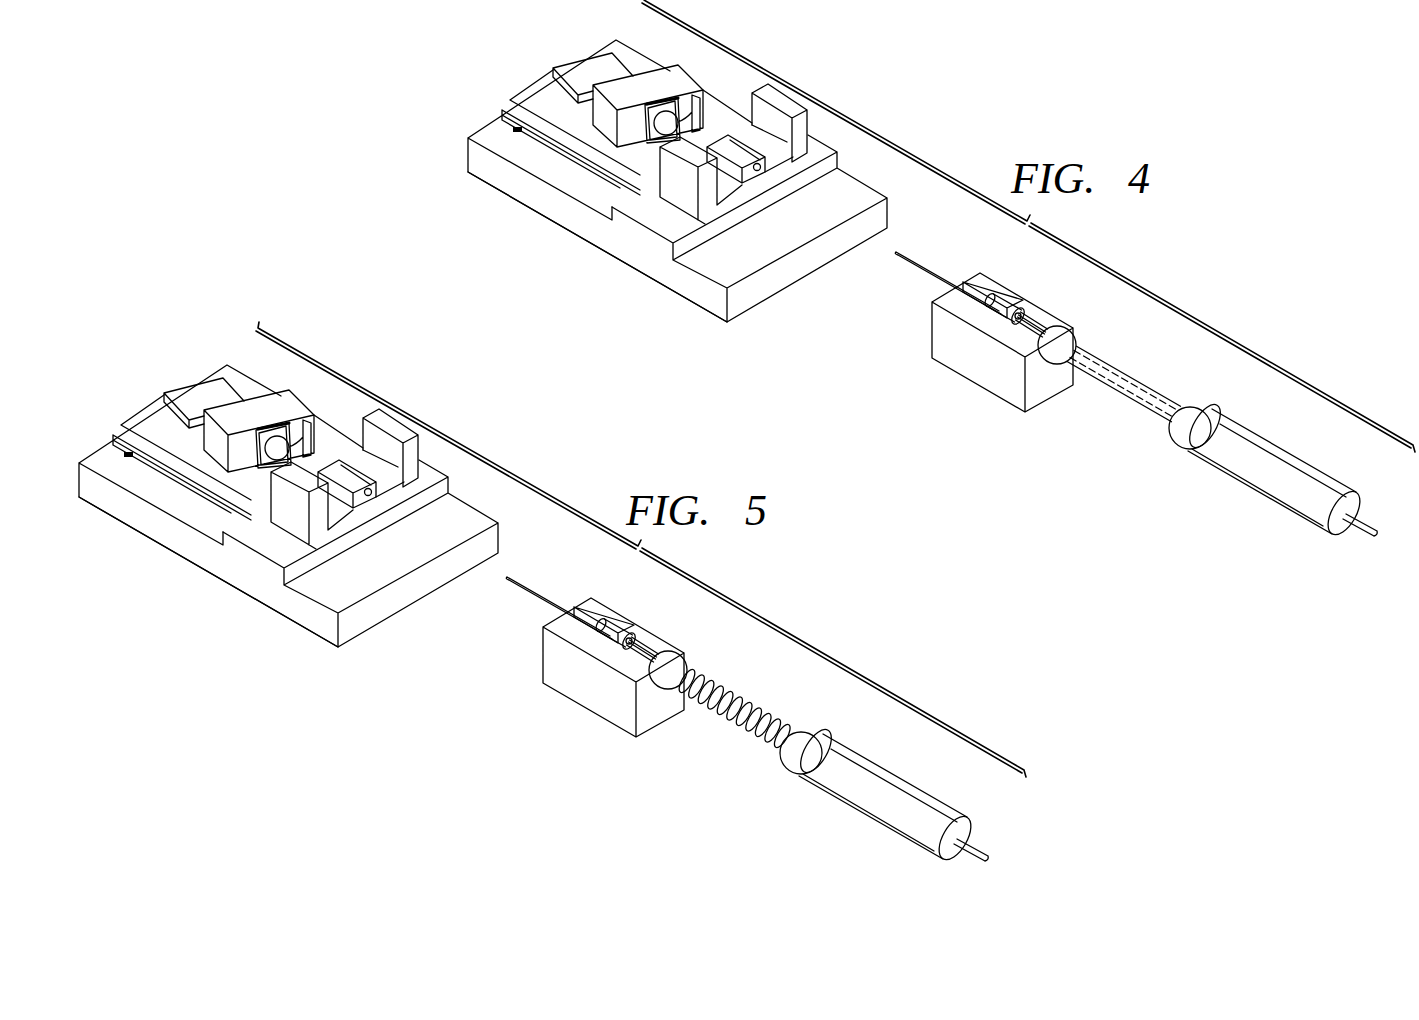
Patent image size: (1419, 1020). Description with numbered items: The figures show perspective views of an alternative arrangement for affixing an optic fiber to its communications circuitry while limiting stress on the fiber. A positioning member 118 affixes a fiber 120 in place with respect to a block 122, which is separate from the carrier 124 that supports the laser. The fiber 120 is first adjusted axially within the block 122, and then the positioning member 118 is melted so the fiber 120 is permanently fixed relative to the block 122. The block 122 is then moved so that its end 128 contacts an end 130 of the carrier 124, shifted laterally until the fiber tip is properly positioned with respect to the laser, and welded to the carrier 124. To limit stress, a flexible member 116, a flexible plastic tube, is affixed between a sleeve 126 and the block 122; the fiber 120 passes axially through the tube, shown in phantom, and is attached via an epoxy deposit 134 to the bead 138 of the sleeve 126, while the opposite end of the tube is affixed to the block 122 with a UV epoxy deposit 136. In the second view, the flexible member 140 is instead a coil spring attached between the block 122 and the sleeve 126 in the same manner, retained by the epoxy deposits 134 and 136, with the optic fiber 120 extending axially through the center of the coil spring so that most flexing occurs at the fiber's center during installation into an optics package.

In FIG. 4, the flexible member 116 is at (1143, 383).
In FIG. 4, the positioning member 118 is at (1003, 302).
In FIG. 5, the positioning member 118 is at (626, 613).
In FIG. 4, the fiber 120 is at (937, 263).
In FIG. 5, the fiber 120 is at (582, 602).
In FIG. 4, the block 122 is at (960, 376).
In FIG. 5, the block 122 is at (572, 677).
In FIG. 4, the carrier 124 is at (518, 200).
In FIG. 5, the carrier 124 is at (199, 506).
In FIG. 4, the sleeve 126 is at (1277, 443).
In FIG. 5, the sleeve 126 is at (893, 793).
In FIG. 4, the end 128 is at (931, 330).
In FIG. 5, the end 128 is at (578, 667).
In FIG. 4, the end 130 is at (760, 292).
In FIG. 5, the end 130 is at (288, 531).
In FIG. 4, the epoxy deposit 134 is at (1183, 405).
In FIG. 5, the epoxy deposit 134 is at (809, 729).
In FIG. 4, the UV epoxy deposit 136 is at (1063, 328).
In FIG. 5, the UV epoxy deposit 136 is at (678, 646).
In FIG. 4, the bead 138 is at (1188, 443).
In FIG. 5, the bead 138 is at (834, 809).
In FIG. 5, the flexible member 140 is at (734, 691).